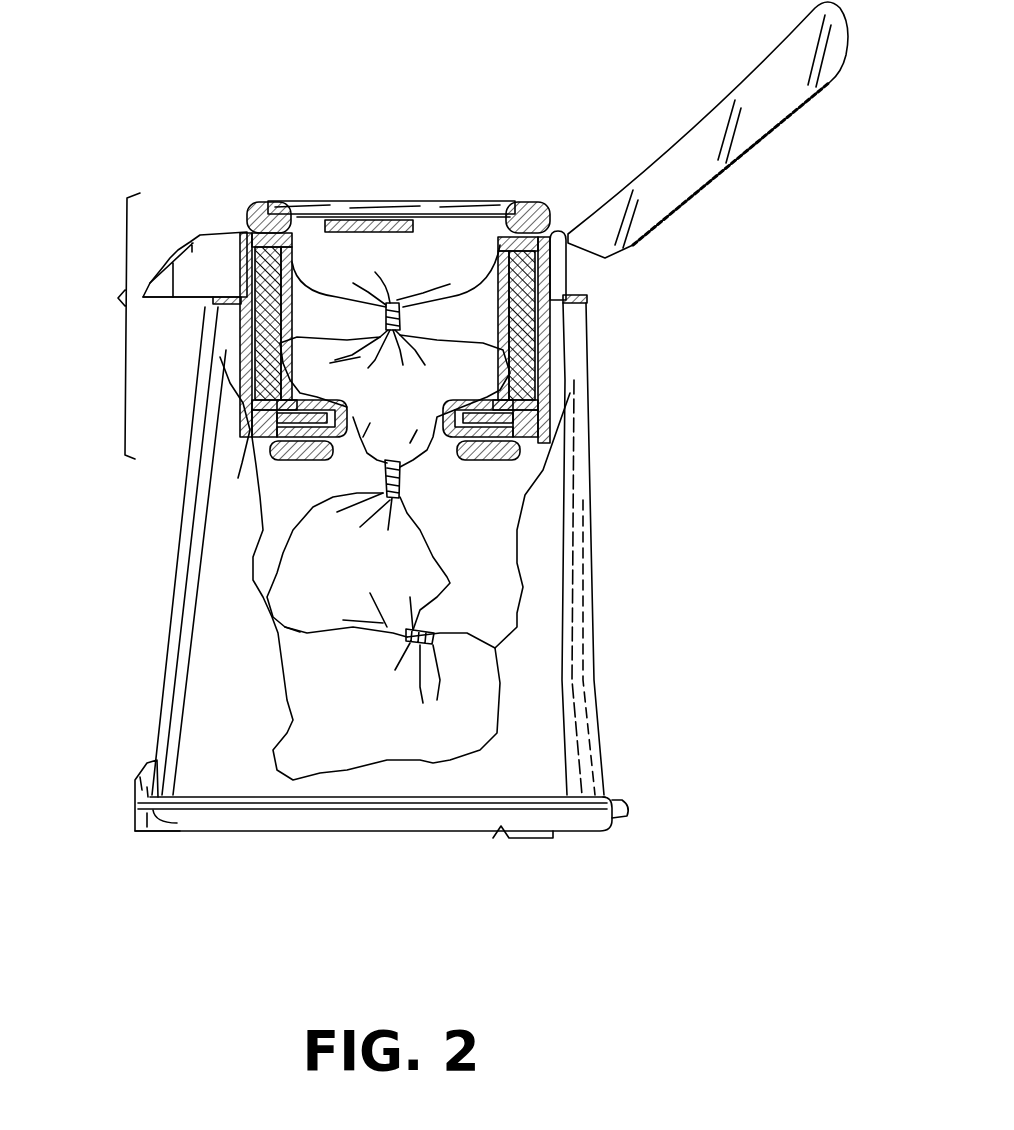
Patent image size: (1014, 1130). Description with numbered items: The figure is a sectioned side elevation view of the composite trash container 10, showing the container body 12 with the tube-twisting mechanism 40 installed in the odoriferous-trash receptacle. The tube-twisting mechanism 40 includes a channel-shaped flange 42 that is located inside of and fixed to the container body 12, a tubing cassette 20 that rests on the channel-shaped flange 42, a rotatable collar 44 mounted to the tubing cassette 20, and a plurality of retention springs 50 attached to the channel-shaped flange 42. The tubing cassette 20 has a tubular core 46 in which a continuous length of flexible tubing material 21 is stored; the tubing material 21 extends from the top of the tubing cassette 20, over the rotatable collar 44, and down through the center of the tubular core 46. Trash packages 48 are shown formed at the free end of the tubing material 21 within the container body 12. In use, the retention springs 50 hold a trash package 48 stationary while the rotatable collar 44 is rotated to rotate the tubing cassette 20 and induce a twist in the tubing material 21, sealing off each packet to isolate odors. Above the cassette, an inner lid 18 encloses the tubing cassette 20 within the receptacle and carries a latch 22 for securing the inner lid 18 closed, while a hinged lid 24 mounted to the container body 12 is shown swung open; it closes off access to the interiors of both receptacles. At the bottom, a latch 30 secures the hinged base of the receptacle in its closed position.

The composite trash container 10 is at (357, 820).
The container body 12 is at (597, 555).
The inner lid 18 is at (568, 283).
The tubing cassette 20 is at (510, 367).
The tubing material 21 is at (247, 230).
The latch 22 is at (157, 265).
The hinged lid 24 is at (722, 105).
The latch 30 is at (133, 778).
The tube-twisting mechanism 40 is at (400, 308).
The channel-shaped flange 42 is at (547, 387).
The rotatable collar 44 is at (312, 198).
The tubular core 46 is at (290, 328).
The trash packages 48 is at (348, 402).
The retention springs 50 is at (480, 457).